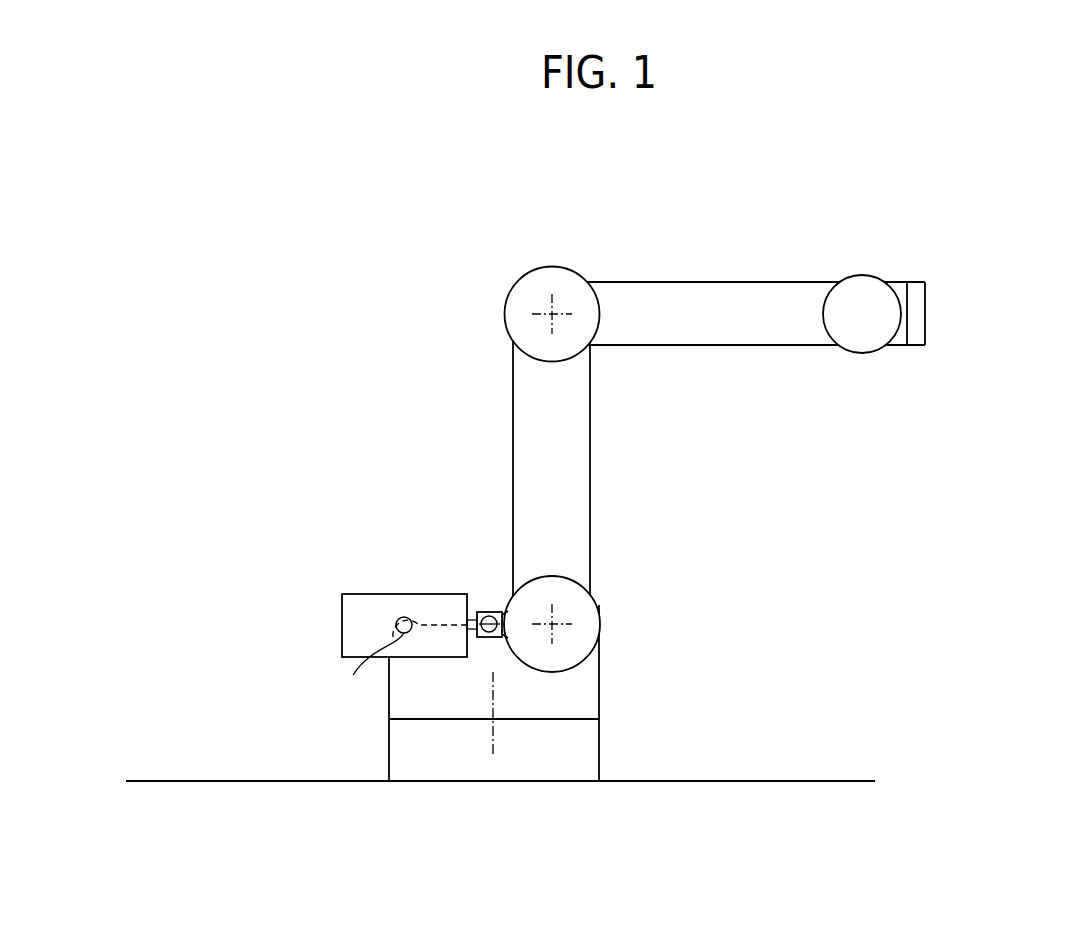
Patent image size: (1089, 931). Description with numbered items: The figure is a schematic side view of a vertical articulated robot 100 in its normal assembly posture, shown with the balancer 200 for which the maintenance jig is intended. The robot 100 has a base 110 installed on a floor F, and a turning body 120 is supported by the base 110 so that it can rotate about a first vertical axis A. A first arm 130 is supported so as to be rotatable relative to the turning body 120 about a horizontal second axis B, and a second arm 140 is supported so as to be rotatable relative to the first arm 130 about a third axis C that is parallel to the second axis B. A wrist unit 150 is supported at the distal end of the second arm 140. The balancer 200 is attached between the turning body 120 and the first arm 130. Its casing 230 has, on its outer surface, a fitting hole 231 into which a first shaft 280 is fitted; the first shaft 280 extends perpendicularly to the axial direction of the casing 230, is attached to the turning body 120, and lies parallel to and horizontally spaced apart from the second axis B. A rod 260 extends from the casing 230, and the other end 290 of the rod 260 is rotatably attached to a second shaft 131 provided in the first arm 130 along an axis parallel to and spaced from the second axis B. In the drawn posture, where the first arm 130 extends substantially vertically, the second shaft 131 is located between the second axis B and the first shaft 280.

The robot 100 is at (680, 224).
The base 110 is at (599, 745).
The turning body 120 is at (599, 675).
The first arm 130 is at (592, 483).
The second shaft 131 is at (492, 639).
The second arm 140 is at (785, 345).
The wrist unit 150 is at (945, 317).
The balancer 200 is at (365, 541).
The casing 230 is at (324, 624).
The fitting hole 231 is at (417, 614).
The rod 260 is at (475, 640).
The first shaft 280 is at (367, 671).
The other end of the rod 290 is at (487, 611).
The first vertical axis A is at (493, 737).
The second axis B is at (555, 622).
The third axis C is at (550, 312).
The floor F is at (172, 781).